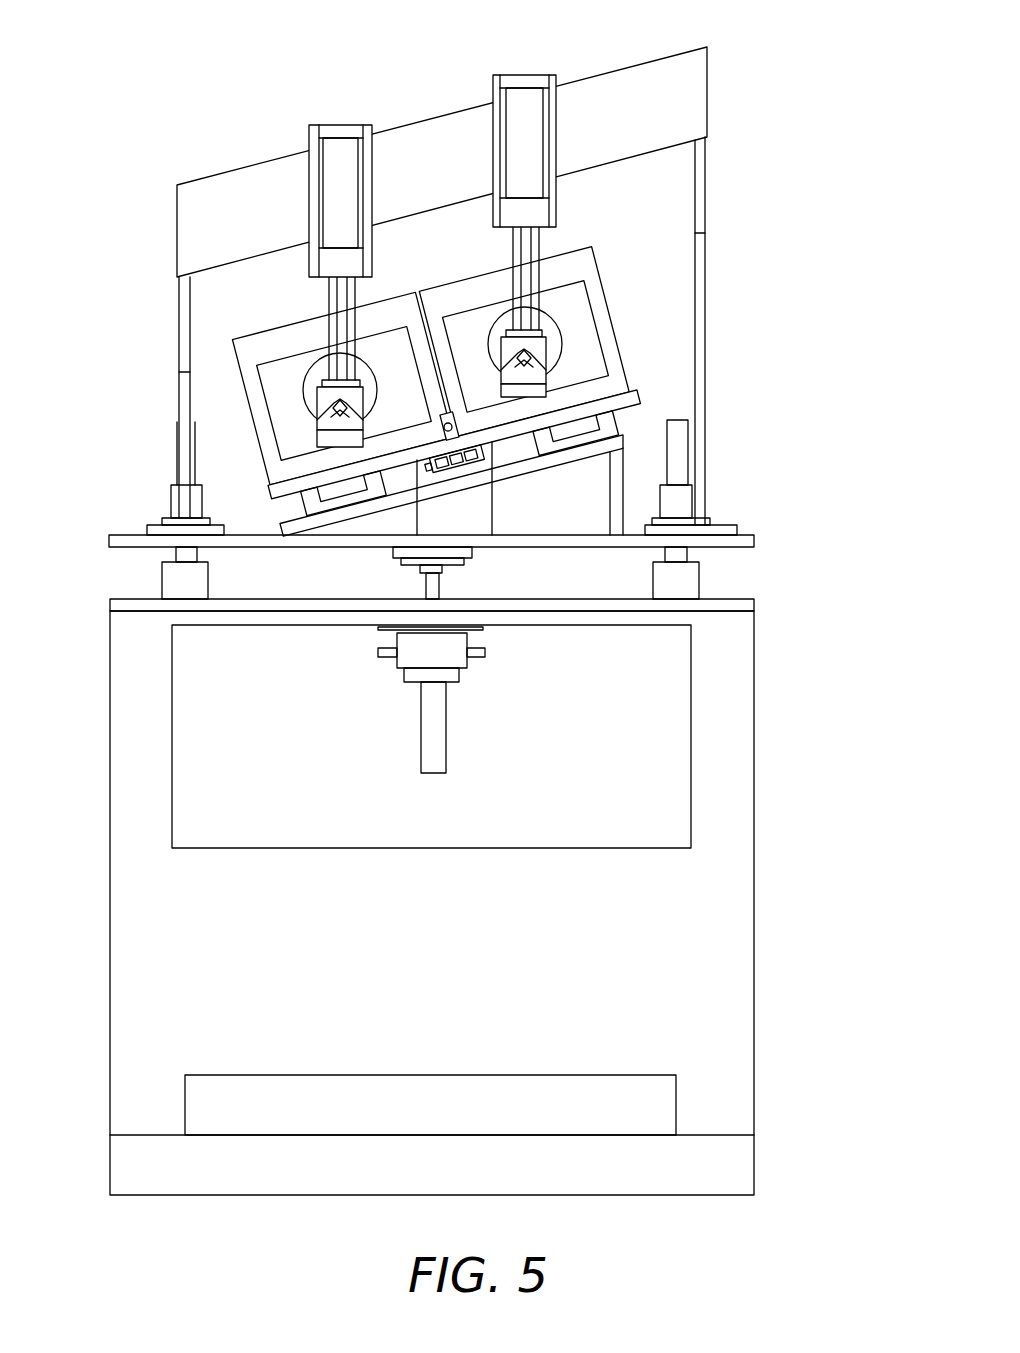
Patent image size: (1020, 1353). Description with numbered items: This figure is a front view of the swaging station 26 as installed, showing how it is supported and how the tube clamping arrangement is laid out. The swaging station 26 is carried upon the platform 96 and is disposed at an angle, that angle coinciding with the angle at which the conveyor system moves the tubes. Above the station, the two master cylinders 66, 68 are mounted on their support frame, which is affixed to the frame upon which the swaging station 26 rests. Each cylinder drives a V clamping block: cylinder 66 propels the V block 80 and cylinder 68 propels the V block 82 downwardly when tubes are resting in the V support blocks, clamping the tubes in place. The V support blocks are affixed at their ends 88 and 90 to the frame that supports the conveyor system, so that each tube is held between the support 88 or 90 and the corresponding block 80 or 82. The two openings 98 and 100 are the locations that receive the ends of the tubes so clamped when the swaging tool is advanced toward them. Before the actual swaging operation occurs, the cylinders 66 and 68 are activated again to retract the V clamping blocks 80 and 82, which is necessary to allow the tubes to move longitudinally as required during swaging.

The swaging station 26 is at (602, 240).
The master cylinder 66 is at (340, 130).
The master cylinder 68 is at (524, 78).
The V block 80 is at (325, 398).
The V block 82 is at (543, 353).
The end of V support block 88 is at (538, 390).
The end of V support block 90 is at (327, 440).
The platform 96 is at (527, 546).
The opening 98 is at (548, 325).
The opening 100 is at (322, 372).